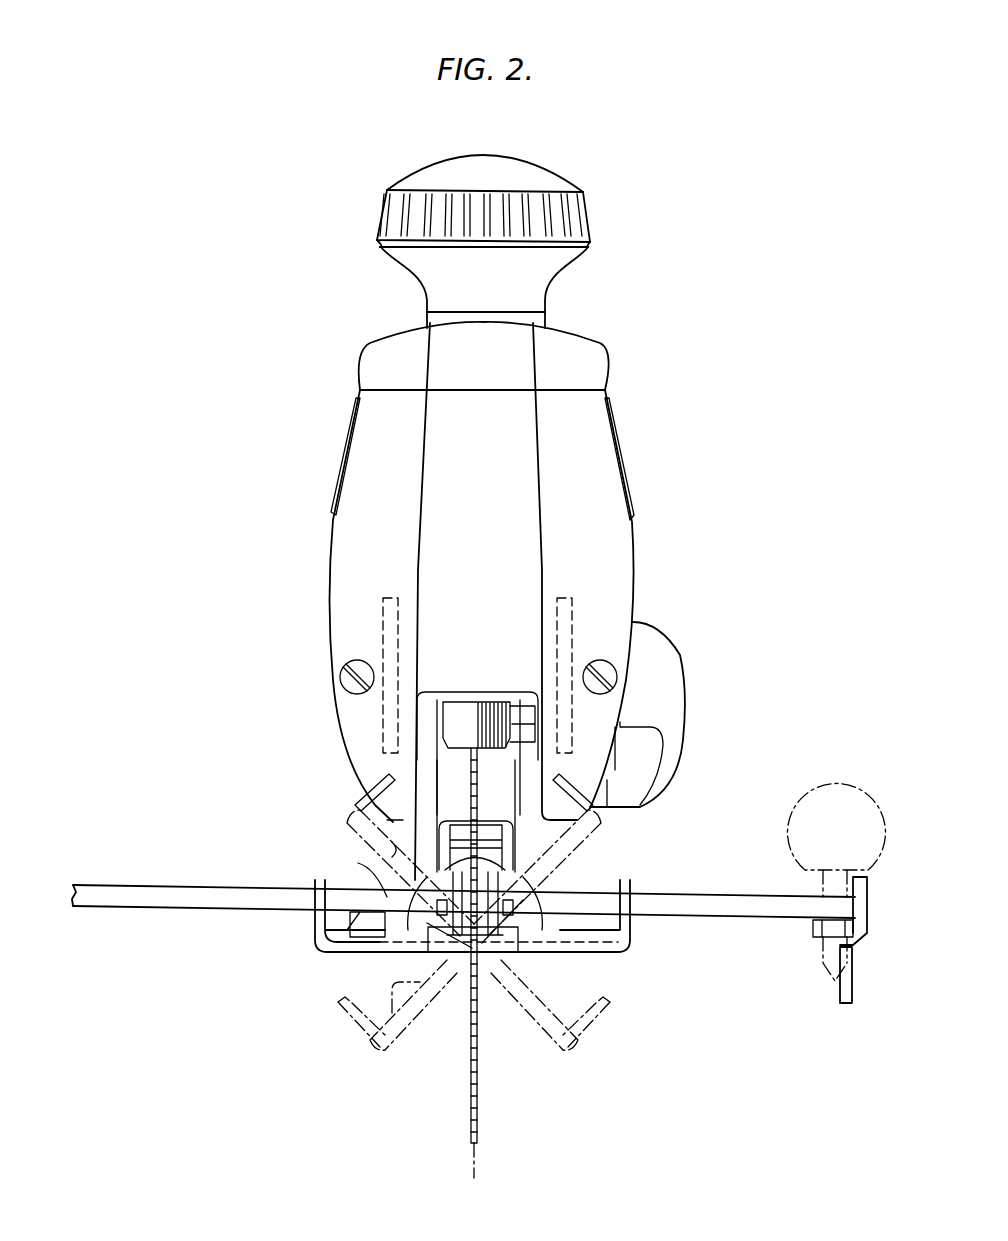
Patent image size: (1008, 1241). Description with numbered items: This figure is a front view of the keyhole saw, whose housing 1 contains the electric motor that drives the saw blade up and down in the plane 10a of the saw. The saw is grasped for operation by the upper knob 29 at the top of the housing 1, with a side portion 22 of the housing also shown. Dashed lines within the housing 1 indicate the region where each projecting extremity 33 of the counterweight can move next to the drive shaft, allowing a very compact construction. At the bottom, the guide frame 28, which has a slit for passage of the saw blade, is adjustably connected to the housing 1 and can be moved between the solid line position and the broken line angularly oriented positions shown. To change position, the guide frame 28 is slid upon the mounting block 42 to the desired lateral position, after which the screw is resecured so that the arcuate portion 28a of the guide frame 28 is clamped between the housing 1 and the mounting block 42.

The housing 1 is at (330, 565).
The housing projection 22 is at (675, 693).
The guide frame 28 is at (318, 918).
The arcuate portion 28a is at (354, 874).
The upper knob 29 is at (543, 167).
The projecting extremity 33 is at (385, 612).
The mounting block 42 is at (553, 893).
The plane of the saw 10a is at (470, 1166).